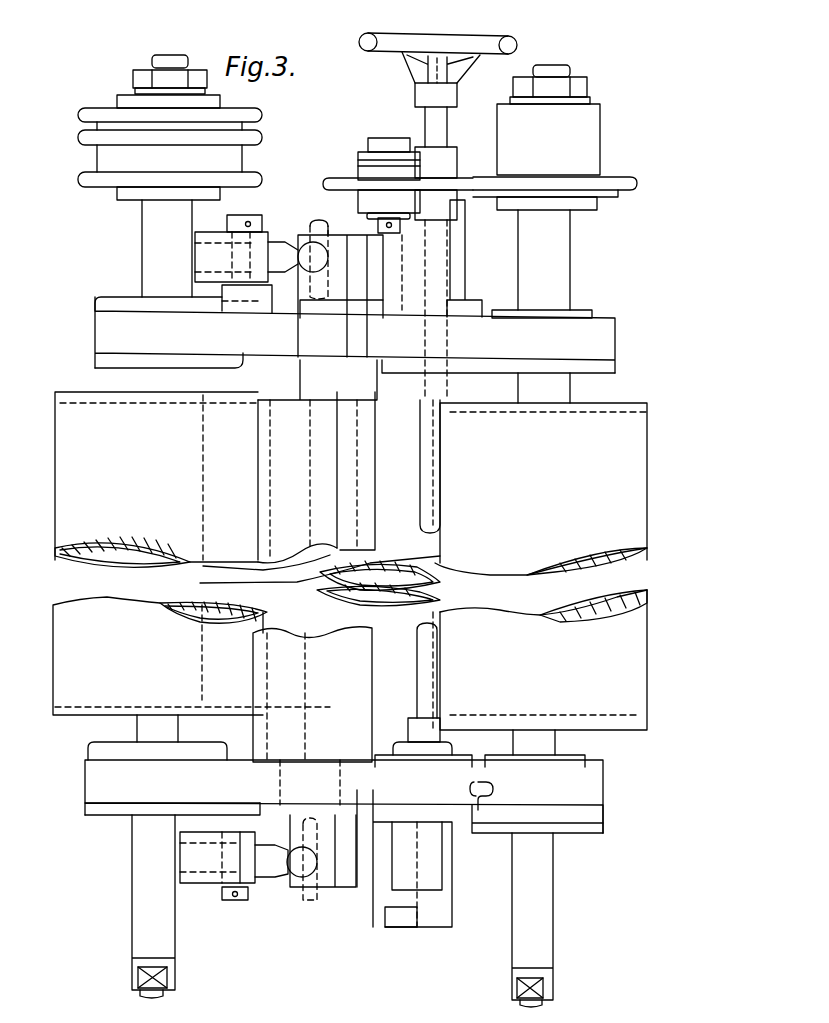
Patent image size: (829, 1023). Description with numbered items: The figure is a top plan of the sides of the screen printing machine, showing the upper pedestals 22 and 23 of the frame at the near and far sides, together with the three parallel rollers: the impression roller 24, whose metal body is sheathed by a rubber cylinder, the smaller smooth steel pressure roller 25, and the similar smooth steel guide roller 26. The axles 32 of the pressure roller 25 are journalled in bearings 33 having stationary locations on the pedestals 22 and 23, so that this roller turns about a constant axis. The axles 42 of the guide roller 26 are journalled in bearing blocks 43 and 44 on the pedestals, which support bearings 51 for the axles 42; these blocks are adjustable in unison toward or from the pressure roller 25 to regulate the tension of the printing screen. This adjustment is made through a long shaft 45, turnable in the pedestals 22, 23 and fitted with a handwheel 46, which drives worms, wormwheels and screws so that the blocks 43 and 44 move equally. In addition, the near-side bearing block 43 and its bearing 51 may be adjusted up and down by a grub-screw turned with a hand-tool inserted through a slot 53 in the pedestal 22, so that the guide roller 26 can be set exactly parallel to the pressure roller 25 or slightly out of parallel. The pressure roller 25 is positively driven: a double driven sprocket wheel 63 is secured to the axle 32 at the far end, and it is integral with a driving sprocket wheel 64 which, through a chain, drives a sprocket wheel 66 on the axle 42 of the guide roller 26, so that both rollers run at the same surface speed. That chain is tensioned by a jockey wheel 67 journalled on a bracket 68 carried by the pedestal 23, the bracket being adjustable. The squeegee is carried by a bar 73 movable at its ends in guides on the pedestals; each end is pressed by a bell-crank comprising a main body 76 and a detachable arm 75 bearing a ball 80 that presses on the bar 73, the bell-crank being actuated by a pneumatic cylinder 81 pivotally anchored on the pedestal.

The upper pedestal 22 is at (88, 778).
The upper pedestal 23 is at (100, 322).
The impression roller 24 is at (446, 590).
The pressure roller 25 is at (88, 612).
The guide roller 26 is at (515, 566).
The axle 32 is at (142, 215).
The bearing 33 is at (104, 296).
The axle 42 is at (558, 281).
The bearing block 43 is at (608, 813).
The bearing block 44 is at (610, 367).
The shaft 45 is at (430, 456).
The handwheel 46 is at (358, 41).
The bearing 51 is at (567, 766).
The slot 53 is at (490, 802).
The driven sprocket wheel 63 is at (260, 139).
The driving sprocket wheel 64 is at (260, 182).
The sprocket wheel 66 is at (633, 198).
The jockey wheel 67 is at (331, 178).
The bracket 68 is at (358, 152).
The bar 73 is at (343, 634).
The arm 75 is at (272, 878).
The main body 76 is at (208, 884).
The ball 80 is at (302, 880).
The cylinder 81 is at (363, 894).